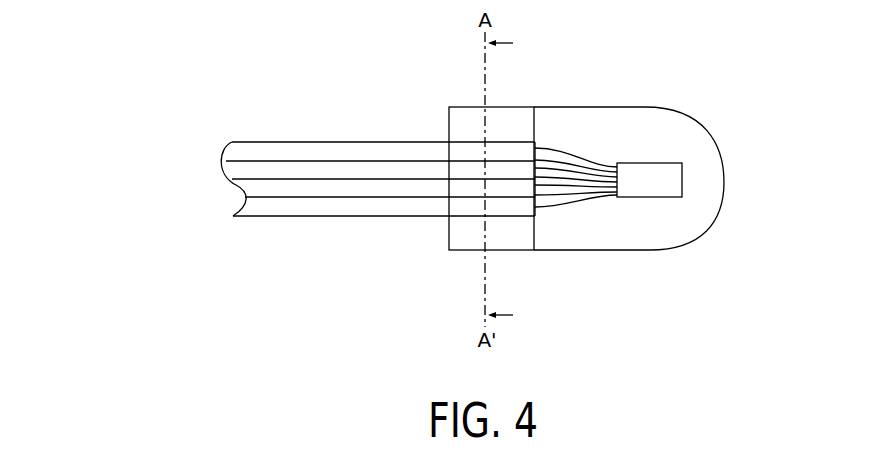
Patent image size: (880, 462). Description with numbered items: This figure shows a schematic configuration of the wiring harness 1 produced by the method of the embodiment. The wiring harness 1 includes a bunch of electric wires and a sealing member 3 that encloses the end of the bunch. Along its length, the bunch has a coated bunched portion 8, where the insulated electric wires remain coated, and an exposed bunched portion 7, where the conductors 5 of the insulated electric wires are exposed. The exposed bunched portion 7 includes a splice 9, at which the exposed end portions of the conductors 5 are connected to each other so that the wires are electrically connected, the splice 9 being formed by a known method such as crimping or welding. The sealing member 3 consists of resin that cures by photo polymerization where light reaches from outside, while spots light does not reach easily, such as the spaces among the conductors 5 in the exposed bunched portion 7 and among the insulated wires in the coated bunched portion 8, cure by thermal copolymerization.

The wiring harness 1 is at (494, 194).
The sealing member 3 is at (613, 104).
The conductors 5 is at (562, 185).
The exposed bunched portion 7 is at (682, 287).
The coated bunched portion 8 is at (232, 287).
The splice 9 is at (653, 191).